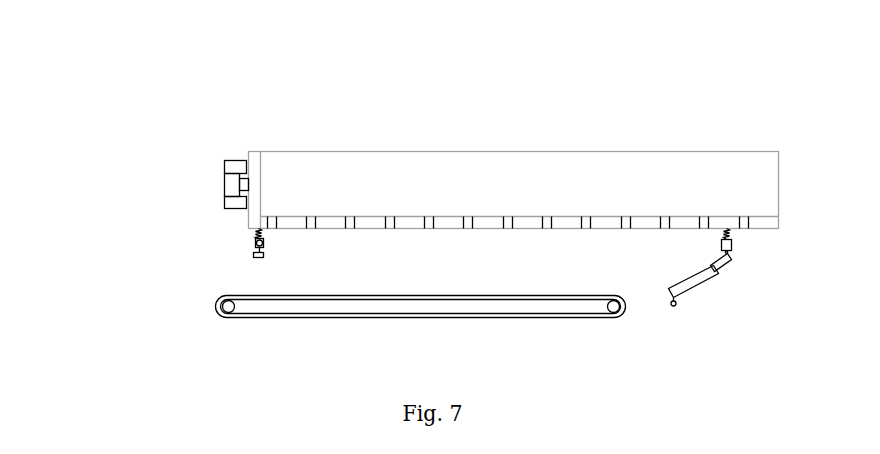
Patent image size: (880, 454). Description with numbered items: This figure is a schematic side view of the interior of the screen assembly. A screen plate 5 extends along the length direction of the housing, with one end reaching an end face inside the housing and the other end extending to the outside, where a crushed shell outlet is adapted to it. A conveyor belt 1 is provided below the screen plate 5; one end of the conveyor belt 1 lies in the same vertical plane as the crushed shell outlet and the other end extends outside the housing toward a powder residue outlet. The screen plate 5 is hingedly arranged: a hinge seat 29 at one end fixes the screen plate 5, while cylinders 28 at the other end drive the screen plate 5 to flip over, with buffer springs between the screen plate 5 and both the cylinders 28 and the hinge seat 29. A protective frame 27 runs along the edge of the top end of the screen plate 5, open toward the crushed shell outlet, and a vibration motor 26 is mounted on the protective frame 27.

The conveyor belt 1 is at (248, 300).
The screen plate 5 is at (412, 220).
The vibration motor 26 is at (237, 165).
The protective frame 27 is at (545, 175).
The cylinder 28 is at (697, 278).
The hinge seat 29 is at (253, 247).